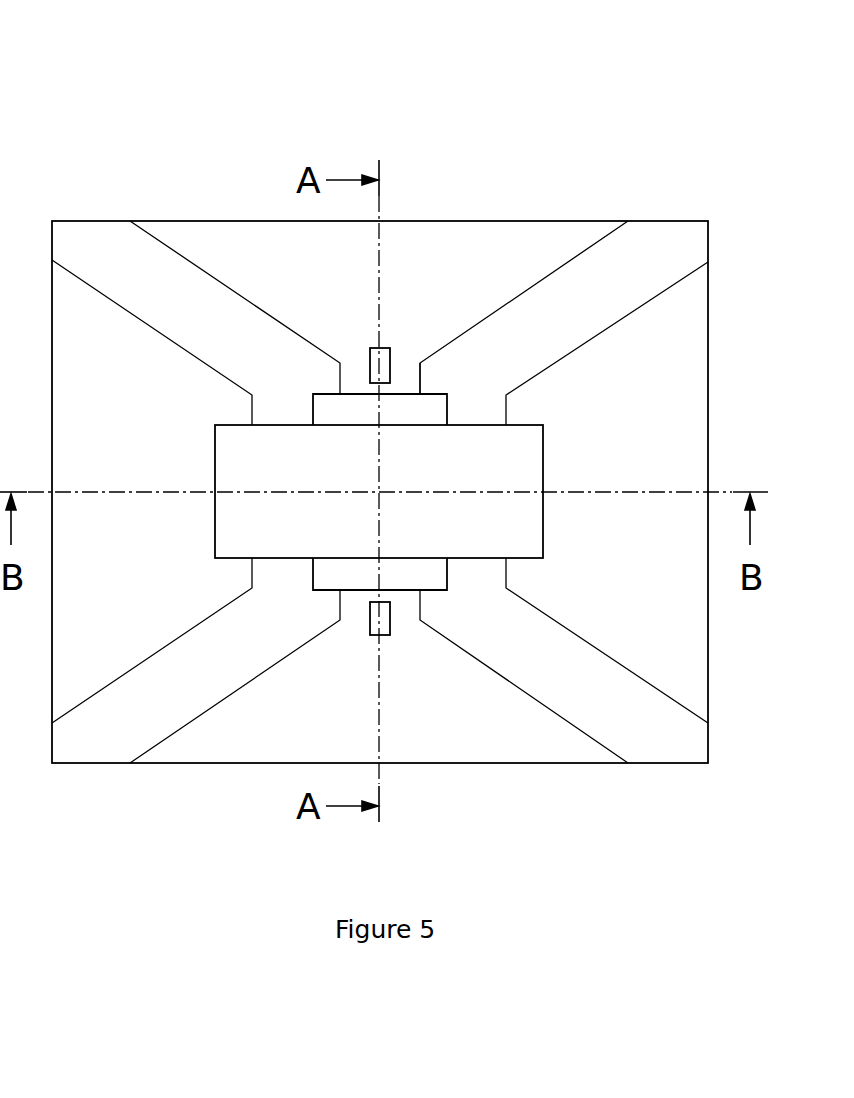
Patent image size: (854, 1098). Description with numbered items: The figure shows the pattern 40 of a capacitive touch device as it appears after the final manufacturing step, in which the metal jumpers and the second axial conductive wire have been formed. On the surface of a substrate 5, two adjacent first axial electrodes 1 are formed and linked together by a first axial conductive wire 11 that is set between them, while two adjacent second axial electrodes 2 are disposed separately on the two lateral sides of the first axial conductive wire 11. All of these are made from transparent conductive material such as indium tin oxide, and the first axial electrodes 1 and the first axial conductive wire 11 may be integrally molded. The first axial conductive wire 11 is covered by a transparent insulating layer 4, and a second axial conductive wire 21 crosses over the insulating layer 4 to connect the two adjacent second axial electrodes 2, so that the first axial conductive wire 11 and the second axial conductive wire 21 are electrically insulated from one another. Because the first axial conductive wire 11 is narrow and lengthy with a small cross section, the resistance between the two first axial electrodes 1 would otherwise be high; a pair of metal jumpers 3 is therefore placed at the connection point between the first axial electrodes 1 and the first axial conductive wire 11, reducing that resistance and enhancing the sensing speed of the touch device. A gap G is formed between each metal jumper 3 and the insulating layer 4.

The pattern 40 is at (62, 37).
The first axial electrode 1 is at (504, 248).
The second axial electrode 2 is at (83, 397).
The metal jumper 3 is at (367, 373).
The insulating layer 4 is at (433, 405).
The substrate 5 is at (662, 248).
The first axial conductive wire 11 is at (407, 377).
The second axial conductive wire 21 is at (503, 457).
The gap G is at (383, 597).